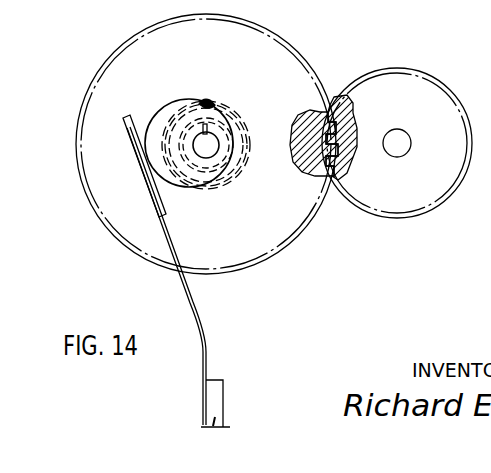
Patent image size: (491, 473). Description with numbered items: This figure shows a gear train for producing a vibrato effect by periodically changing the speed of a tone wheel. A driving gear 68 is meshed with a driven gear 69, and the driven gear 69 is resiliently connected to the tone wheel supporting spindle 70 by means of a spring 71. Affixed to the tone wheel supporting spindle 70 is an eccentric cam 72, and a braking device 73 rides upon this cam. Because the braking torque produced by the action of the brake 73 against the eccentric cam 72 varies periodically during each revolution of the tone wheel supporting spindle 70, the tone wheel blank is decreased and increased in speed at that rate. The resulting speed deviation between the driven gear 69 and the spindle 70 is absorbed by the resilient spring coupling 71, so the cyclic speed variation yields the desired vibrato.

The driving gear 68 is at (385, 68).
The driven gear 69 is at (132, 38).
The tone wheel supporting spindle 70 is at (212, 157).
The spring 71 is at (232, 117).
The eccentric cam 72 is at (165, 121).
The braking device 73 is at (143, 188).